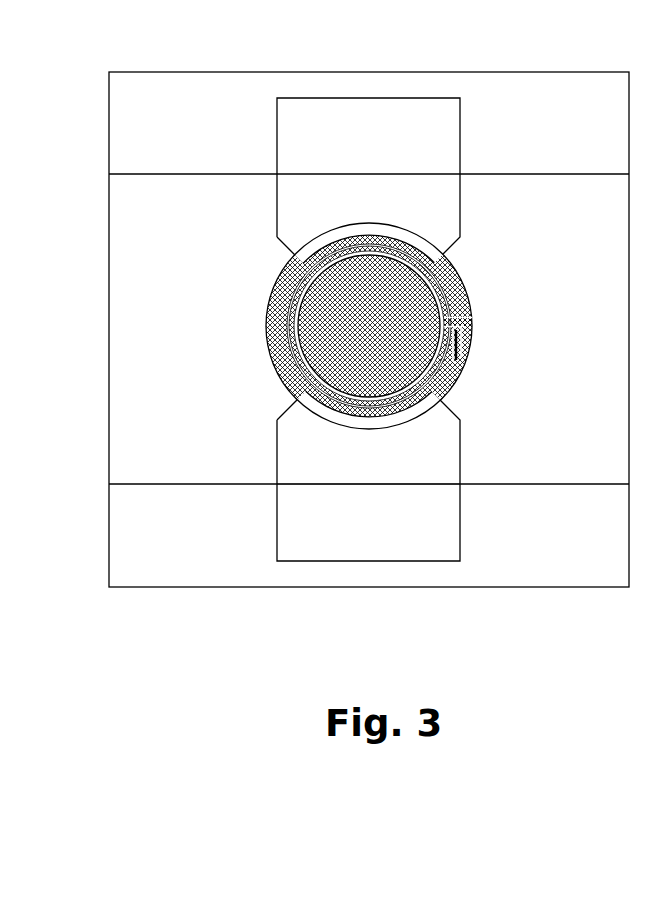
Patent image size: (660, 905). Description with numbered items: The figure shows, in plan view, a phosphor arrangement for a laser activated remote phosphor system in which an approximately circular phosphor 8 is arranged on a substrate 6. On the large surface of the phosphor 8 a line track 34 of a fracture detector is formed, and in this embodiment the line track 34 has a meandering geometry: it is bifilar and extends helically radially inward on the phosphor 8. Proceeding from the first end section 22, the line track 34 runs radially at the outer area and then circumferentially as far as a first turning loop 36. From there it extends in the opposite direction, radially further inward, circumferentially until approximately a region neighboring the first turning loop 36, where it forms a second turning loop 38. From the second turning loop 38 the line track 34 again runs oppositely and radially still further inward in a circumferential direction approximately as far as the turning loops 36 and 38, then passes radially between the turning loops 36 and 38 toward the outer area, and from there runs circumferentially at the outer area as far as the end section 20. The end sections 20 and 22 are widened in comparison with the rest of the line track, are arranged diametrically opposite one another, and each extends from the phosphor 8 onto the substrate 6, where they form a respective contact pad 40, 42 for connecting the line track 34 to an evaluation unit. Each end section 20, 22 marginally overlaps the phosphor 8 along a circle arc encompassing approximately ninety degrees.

The substrate 6 is at (135, 213).
The phosphor 8 is at (259, 332).
The end section 20 is at (418, 248).
The end section 22 is at (388, 423).
The line track 34 is at (322, 468).
The first turning loop 36 is at (470, 343).
The second turning loop 38 is at (471, 314).
The contact pad 40 is at (353, 190).
The contact pad 42 is at (357, 468).